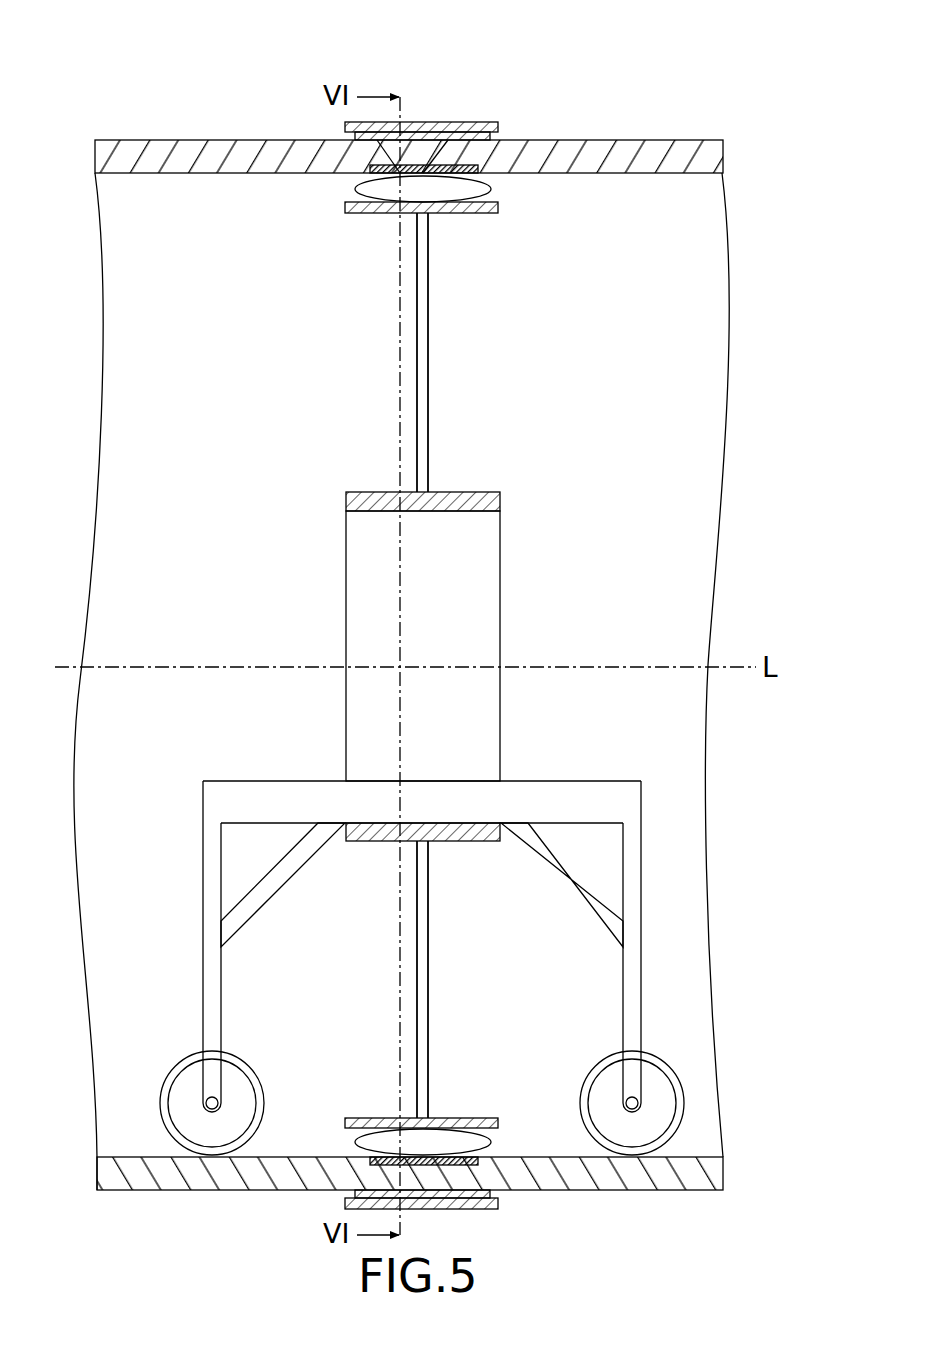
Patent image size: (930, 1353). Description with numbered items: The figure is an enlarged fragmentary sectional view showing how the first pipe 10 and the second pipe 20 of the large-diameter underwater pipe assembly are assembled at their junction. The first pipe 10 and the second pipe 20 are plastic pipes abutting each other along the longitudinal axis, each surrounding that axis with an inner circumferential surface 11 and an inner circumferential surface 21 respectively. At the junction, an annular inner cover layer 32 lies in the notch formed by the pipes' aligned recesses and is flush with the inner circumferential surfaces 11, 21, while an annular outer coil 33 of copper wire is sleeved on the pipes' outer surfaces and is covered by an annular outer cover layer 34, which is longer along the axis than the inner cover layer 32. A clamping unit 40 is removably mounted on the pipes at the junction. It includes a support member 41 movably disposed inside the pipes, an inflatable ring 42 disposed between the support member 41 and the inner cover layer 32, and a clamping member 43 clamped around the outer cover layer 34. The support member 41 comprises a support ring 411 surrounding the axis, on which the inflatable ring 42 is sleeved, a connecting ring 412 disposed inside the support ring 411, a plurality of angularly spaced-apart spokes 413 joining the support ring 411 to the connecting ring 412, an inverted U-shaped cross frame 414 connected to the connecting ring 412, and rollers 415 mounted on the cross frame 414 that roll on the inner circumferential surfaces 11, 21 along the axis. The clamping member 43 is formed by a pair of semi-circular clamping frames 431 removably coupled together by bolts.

The first pipe 10 is at (183, 147).
The inner circumferential surface 11 is at (120, 1157).
The second pipe 20 is at (638, 147).
The inner circumferential surface 21 is at (690, 1156).
The inner cover layer 32 is at (350, 181).
The outer coil 33 is at (443, 122).
The outer cover layer 34 is at (473, 125).
The clamping unit 40 is at (486, 627).
The support member 41 is at (431, 313).
The inflatable ring 42 is at (482, 190).
The clamping member 43 is at (490, 120).
The support ring 411 is at (350, 213).
The connecting ring 412 is at (490, 500).
The spokes 413 is at (430, 378).
The cross frame 414 is at (641, 900).
The rollers 415 is at (686, 1100).
The semi-circular clamping frames 431 is at (485, 1206).